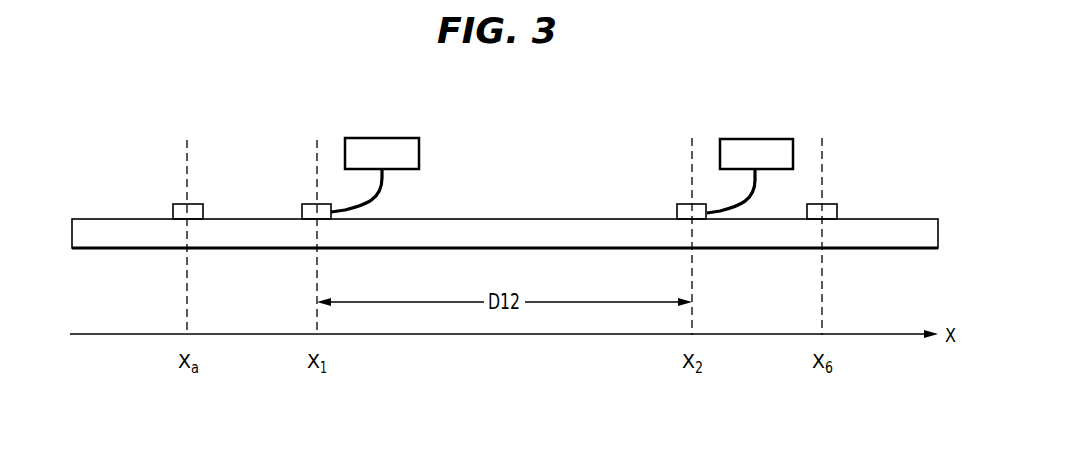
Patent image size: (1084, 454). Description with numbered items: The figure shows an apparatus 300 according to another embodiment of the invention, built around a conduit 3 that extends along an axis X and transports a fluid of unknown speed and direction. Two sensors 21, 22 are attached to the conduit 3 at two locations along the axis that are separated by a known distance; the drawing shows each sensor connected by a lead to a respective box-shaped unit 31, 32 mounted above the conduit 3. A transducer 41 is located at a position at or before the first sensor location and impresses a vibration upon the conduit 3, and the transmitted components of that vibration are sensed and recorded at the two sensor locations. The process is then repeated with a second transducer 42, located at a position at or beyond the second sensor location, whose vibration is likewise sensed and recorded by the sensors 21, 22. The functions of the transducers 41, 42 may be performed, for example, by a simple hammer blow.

The apparatus 300 is at (198, 78).
The conduit 3 is at (507, 222).
The sensor 21 is at (306, 204).
The sensor 22 is at (683, 204).
The first measuring device 31 is at (364, 138).
The second measuring device 32 is at (775, 139).
The transducer 41 is at (178, 204).
The second transducer 42 is at (828, 204).